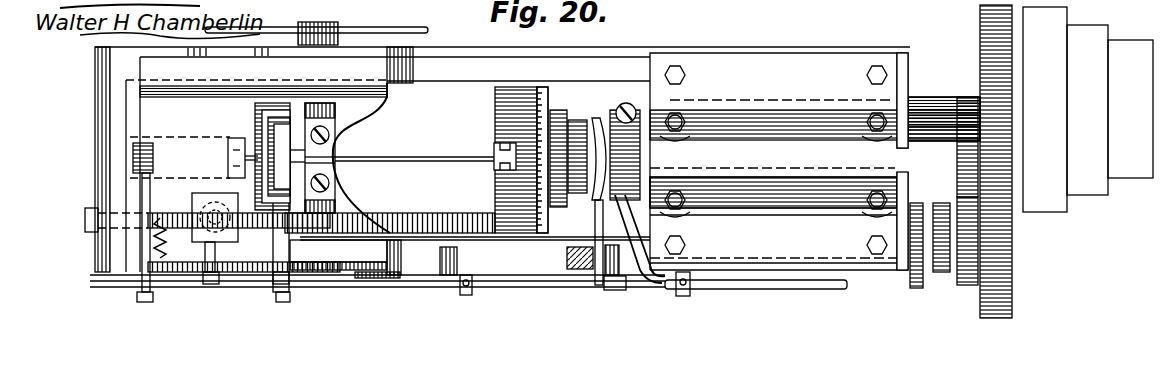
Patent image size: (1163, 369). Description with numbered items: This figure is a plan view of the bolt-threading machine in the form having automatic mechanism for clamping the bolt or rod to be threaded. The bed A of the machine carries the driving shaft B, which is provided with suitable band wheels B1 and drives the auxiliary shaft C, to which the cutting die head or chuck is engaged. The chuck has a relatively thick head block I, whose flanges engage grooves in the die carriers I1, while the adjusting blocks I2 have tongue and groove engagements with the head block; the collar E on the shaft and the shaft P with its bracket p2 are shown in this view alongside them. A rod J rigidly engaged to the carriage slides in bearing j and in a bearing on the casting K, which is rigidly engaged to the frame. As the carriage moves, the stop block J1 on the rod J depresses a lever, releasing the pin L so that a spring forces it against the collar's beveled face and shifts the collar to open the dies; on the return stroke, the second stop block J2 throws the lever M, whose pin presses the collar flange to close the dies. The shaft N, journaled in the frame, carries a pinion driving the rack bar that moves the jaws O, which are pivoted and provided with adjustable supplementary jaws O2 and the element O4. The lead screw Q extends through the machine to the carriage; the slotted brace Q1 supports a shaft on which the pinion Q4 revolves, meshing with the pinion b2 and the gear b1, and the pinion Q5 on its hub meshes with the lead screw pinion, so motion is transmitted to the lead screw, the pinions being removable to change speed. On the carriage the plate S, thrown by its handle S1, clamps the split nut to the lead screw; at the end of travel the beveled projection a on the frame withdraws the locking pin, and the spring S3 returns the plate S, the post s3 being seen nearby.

The shaft N is at (390, 30).
The jaws O is at (272, 156).
The supplementary jaws O2 is at (330, 150).
The clamp screw O4 is at (335, 166).
The shaft P is at (420, 160).
The bracket p2 is at (232, 150).
The plate S is at (213, 202).
The handle S1 is at (165, 226).
The spring S3 is at (239, 236).
The post s3 is at (213, 285).
The bearing j is at (268, 287).
The lead screw Q is at (437, 214).
The bed A is at (377, 265).
The beveled projection a is at (370, 278).
The stop block J1 is at (466, 292).
The head block I is at (500, 122).
The die carriers I1 is at (505, 156).
The adjusting blocks I2 is at (533, 160).
The lens E is at (592, 122).
The pin L is at (596, 215).
The casting K is at (612, 292).
The stop block J2 is at (680, 296).
The rod J is at (745, 289).
The auxiliary shaft C is at (640, 152).
The lever M is at (645, 215).
The driving shaft B is at (910, 58).
The gear b1 is at (985, 50).
The pinion b2 is at (966, 105).
The pinion Q4 is at (967, 280).
The slotted brace Q1 is at (915, 250).
The pinion Q5 is at (940, 275).
The band wheels B1 is at (1088, 109).